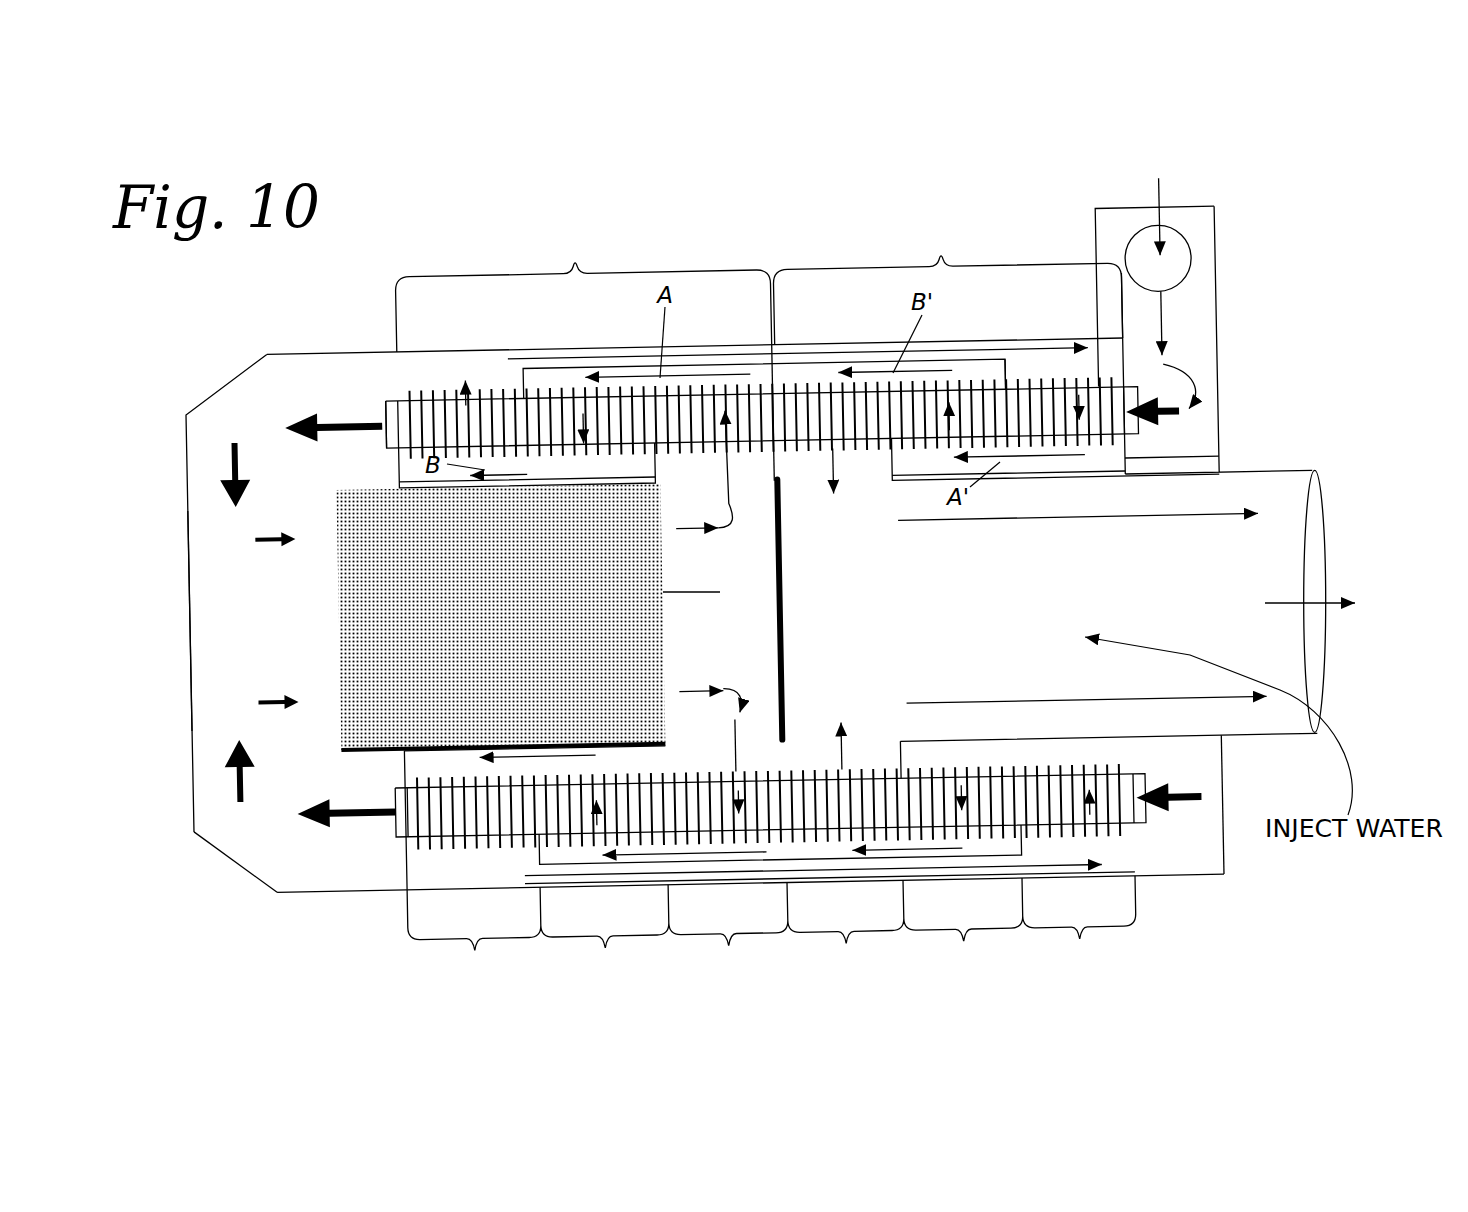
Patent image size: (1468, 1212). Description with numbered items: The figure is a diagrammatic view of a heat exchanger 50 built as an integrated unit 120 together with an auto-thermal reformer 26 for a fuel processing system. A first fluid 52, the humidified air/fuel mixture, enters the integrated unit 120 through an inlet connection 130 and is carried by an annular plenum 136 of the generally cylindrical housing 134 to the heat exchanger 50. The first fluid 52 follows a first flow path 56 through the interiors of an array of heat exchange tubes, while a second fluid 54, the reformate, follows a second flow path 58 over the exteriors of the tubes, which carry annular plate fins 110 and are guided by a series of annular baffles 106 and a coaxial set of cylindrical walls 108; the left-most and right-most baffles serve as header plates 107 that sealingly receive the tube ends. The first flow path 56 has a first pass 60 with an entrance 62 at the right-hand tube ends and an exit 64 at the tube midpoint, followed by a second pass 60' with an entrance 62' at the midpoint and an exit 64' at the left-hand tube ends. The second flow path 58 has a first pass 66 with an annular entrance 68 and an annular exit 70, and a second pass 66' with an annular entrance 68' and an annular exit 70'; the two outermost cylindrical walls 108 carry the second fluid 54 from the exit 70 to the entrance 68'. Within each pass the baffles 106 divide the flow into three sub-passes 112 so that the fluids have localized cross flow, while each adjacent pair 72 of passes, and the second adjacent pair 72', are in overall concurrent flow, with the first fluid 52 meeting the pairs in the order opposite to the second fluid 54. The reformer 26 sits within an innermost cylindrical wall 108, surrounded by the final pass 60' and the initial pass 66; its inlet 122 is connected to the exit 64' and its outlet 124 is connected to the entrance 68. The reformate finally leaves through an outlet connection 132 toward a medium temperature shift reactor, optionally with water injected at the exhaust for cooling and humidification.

The auto-thermal reformer (ATR) 26 is at (500, 617).
The heat exchanger 50 is at (862, 248).
The first fluid (air/fuel mixture) 52 is at (1162, 188).
The second fluid (reformate) 54 is at (855, 375).
The first flow path 56 is at (338, 423).
The second flow path 58 is at (725, 492).
The first pass of the first flow path 60 is at (762, 333).
The second pass of the first flow path 60' is at (770, 533).
The entrance of the first pass 62 is at (1070, 601).
The entrance of the second pass 62' is at (749, 380).
The exit of the first pass 64 is at (909, 339).
The exit of the second pass 64' is at (321, 357).
The first pass of the second flow path 66 is at (761, 418).
The second pass of the second flow path 66' is at (768, 807).
The annular entrance of the first pass 68 is at (934, 689).
The annular entrance of the second pass 68' is at (1125, 346).
The annular exit of the first pass 70 is at (617, 614).
The annular exit of the second pass 70' is at (863, 525).
The adjacent pair of passes 72 is at (764, 378).
The second adjacent pair of passes 72' is at (538, 756).
The annular baffles 106 is at (505, 385).
The header plates 107 is at (397, 484).
The cylindrical walls 108 is at (630, 368).
The fins 110 is at (1048, 835).
The sub-passes 112 is at (771, 928).
The integrated unit 120 is at (232, 378).
The inlet of the ATR 122 is at (315, 620).
The outlet of the ATR 124 is at (663, 592).
The inlet connection 130 is at (1218, 270).
The outlet connection 132 is at (1322, 480).
The cylindrical housing 134 is at (230, 863).
The annular plenum 136 is at (1170, 860).